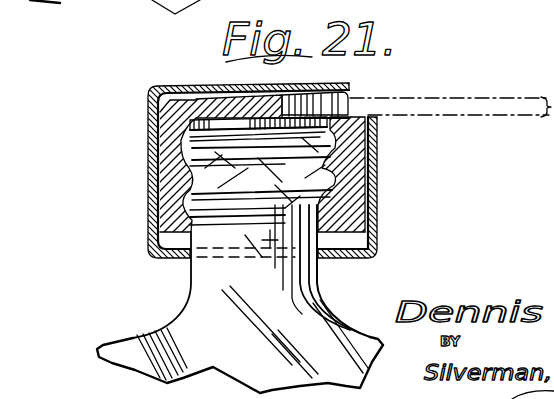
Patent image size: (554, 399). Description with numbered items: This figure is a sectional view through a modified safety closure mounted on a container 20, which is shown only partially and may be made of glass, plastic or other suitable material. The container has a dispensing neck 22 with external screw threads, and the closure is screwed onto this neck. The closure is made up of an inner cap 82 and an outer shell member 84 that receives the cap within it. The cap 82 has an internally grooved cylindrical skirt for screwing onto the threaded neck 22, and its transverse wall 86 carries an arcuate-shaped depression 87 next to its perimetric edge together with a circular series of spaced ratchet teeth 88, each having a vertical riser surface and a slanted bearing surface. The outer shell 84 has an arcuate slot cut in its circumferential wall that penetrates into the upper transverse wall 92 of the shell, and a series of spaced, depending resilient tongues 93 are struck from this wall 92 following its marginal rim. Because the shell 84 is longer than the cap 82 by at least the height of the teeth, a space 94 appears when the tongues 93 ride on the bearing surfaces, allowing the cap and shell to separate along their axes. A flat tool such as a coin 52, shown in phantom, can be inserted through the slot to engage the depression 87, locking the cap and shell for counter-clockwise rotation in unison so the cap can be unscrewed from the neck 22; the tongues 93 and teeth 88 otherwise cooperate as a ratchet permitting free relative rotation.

The container 20 is at (111, 346).
The dispensing neck 22 is at (191, 282).
The coin 52 is at (474, 118).
The inner cap 82 is at (152, 211).
The outer shell member 84 is at (148, 175).
The transverse wall 86 is at (281, 93).
The arcuate-shaped depression 87 is at (350, 114).
The ratchet teeth 88 is at (170, 100).
The upper transverse wall 92 is at (312, 87).
The resilient tongues 93 is at (207, 72).
The space 94 is at (352, 240).